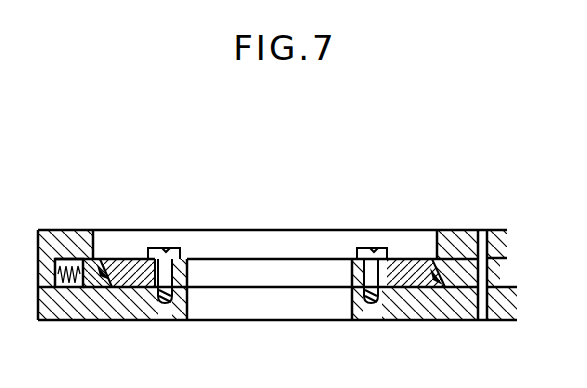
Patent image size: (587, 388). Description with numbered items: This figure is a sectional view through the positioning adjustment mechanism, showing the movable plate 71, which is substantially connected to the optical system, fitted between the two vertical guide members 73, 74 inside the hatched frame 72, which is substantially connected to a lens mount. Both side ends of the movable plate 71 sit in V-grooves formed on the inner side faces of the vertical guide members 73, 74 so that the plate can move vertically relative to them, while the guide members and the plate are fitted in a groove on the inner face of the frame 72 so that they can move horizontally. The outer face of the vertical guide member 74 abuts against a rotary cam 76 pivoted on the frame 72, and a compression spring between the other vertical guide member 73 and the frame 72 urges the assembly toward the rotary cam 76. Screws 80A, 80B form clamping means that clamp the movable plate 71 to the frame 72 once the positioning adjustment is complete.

The frame 72 is at (73, 238).
The vertical guide member 73 is at (112, 258).
The movable plate 71 is at (130, 258).
The screw 80A is at (188, 273).
The screw 80B is at (350, 275).
The vertical guide member 74 is at (453, 255).
The rotary cam 76 is at (476, 250).